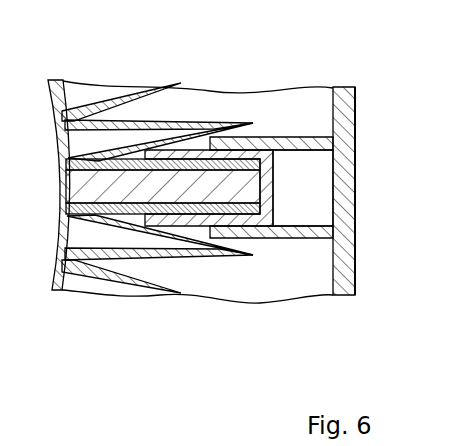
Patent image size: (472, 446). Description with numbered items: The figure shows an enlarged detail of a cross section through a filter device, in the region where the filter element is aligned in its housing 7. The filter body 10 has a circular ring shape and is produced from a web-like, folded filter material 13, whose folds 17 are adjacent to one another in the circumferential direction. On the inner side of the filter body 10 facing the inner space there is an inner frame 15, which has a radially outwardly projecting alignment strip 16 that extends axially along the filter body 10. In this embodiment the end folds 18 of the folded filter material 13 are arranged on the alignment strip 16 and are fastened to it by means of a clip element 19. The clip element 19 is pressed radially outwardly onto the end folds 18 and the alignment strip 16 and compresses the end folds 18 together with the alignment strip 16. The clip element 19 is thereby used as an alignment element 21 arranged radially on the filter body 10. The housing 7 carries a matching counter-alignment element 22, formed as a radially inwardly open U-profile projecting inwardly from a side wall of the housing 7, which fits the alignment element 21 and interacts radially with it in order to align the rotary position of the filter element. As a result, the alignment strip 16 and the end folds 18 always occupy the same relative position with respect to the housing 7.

The housing 7 is at (360, 111).
The filter body 10 is at (113, 295).
The folded filter material 13 is at (251, 257).
The inner frame 15 is at (72, 88).
The alignment strip 16 is at (187, 188).
The folds 17 is at (146, 119).
The end folds 18 is at (233, 165).
The clip element 19 is at (271, 188).
The alignment element 21 is at (284, 194).
The counter-alignment element 22 is at (295, 140).